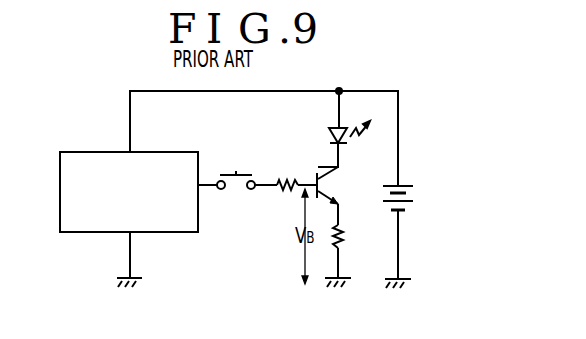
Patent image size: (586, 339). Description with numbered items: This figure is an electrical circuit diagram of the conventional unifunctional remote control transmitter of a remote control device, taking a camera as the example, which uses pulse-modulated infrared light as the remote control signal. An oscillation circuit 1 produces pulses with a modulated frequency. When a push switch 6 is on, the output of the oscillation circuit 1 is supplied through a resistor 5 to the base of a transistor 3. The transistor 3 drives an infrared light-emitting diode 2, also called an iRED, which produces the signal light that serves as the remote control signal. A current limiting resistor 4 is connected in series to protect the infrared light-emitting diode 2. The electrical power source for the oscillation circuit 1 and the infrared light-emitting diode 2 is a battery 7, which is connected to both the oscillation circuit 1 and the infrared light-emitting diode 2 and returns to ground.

The oscillation circuit 1 is at (88, 150).
The infrared light-emitting diode 2 is at (327, 135).
The transistor 3 is at (328, 185).
The current limiting resistor 4 is at (343, 235).
The resistor 5 is at (286, 175).
The push switch 6 is at (227, 172).
The battery 7 is at (412, 197).